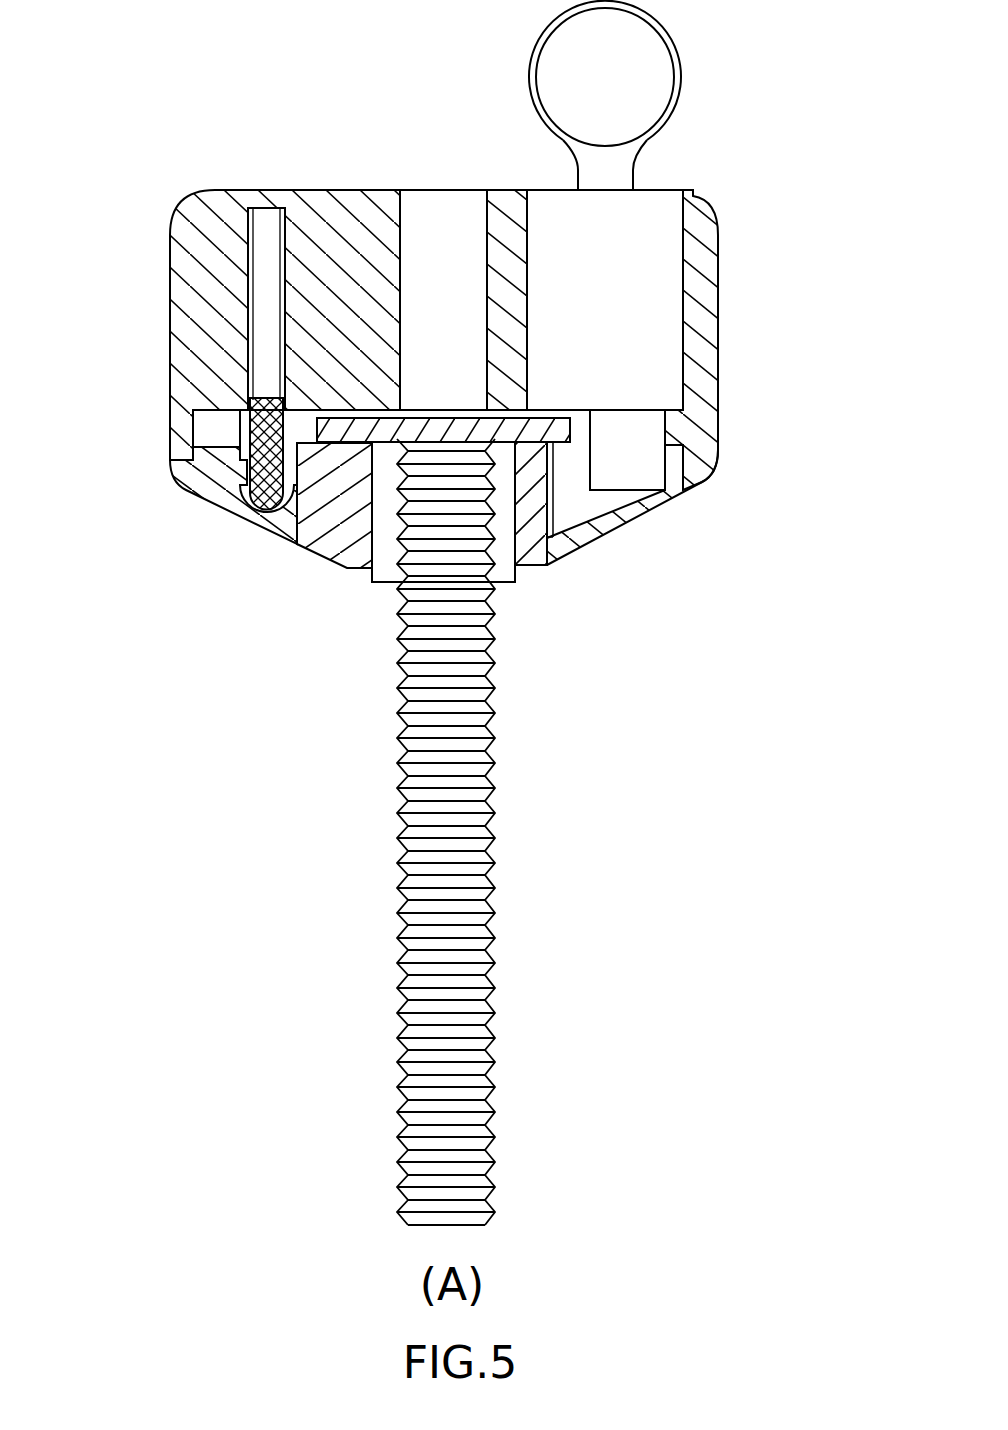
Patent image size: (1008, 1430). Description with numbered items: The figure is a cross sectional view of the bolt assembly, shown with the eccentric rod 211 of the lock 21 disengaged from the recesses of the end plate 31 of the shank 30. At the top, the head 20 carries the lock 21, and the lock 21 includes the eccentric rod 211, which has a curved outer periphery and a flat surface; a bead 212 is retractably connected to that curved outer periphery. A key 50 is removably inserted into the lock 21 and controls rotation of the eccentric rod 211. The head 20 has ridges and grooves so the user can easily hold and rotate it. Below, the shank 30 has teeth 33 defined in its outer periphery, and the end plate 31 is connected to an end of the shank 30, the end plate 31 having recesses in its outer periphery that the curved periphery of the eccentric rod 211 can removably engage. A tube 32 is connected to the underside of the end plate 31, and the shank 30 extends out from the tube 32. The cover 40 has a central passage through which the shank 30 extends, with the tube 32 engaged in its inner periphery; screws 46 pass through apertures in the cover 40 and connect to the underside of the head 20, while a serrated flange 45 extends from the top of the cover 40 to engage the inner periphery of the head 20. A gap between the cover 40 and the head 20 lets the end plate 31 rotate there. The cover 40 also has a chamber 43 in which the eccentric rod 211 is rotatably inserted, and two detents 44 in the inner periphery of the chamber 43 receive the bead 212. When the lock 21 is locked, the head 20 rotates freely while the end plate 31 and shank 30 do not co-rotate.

The head 20 is at (458, 399).
The lock 21 is at (650, 248).
The eccentric rod 211 is at (635, 480).
The bead 212 is at (710, 487).
The shank 30 is at (461, 821).
The end plate 31 is at (338, 445).
The tube 32 is at (390, 578).
The teeth 33 is at (472, 797).
The cover 40 is at (183, 483).
The chamber 43 is at (580, 513).
The detents 44 is at (667, 437).
The serrated flange 45 is at (192, 408).
The screws 46 is at (252, 508).
The key 50 is at (638, 60).